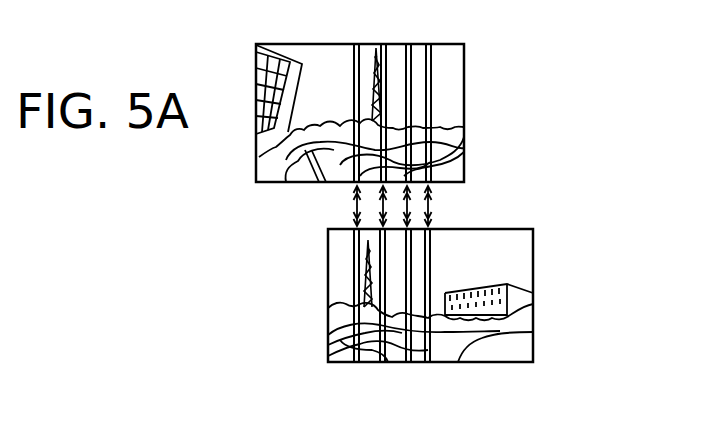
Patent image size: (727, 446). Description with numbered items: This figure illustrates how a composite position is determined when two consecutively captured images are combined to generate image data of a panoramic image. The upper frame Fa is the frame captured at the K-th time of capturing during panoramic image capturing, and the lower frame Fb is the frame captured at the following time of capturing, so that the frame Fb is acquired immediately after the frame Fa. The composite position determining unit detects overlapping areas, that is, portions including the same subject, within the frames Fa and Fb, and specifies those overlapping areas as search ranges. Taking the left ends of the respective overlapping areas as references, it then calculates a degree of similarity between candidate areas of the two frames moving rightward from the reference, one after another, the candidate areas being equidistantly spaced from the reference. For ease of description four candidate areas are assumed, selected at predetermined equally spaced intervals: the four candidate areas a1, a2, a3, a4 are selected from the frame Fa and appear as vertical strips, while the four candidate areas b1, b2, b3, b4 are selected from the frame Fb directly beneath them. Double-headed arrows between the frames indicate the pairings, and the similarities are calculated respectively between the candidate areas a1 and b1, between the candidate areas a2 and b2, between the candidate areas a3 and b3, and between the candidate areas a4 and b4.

The frame Fa is at (464, 106).
The frame Fb is at (533, 273).
The candidate area a1 is at (357, 44).
The candidate area a2 is at (383, 44).
The candidate area a3 is at (407, 44).
The candidate area a4 is at (430, 44).
The candidate area b1 is at (355, 364).
The candidate area b2 is at (382, 364).
The candidate area b3 is at (407, 364).
The candidate area b4 is at (427, 364).